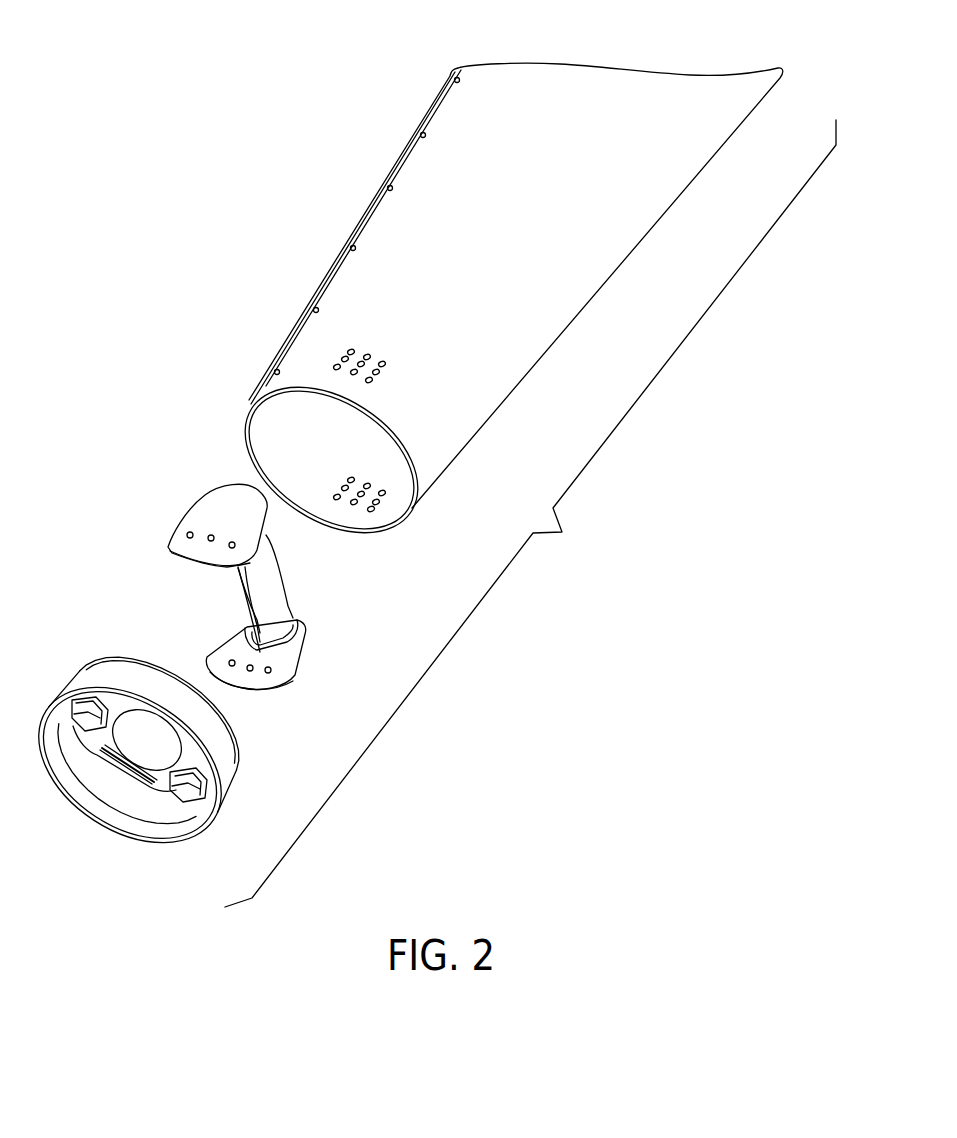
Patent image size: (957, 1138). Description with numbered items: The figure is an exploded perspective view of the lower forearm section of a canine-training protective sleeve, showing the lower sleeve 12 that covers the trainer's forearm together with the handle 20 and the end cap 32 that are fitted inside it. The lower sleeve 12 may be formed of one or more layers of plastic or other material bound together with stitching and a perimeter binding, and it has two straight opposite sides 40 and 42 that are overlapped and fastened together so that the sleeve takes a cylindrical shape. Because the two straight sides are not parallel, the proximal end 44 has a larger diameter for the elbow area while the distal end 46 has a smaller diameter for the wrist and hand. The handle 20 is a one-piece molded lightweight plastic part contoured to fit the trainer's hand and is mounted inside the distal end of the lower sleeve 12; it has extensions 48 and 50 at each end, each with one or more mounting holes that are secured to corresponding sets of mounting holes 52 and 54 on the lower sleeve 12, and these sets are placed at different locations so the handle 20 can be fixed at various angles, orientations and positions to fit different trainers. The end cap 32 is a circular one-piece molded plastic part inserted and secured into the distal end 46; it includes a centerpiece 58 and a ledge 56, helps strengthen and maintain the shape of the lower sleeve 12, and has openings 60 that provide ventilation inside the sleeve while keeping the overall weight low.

The lower sleeve 12 is at (292, 134).
The handle 20 is at (245, 590).
The end cap 32 is at (138, 753).
The side 40 is at (362, 218).
The side 42 is at (406, 175).
The proximal end 44 is at (501, 297).
The distal end 46 is at (347, 536).
The extension 48 is at (205, 499).
The extension 50 is at (285, 687).
The mounting holes 52 is at (392, 364).
The mounting holes 54 is at (380, 513).
The ledge 56 is at (212, 836).
The centerpiece 58 is at (164, 781).
The openings 60 is at (197, 784).